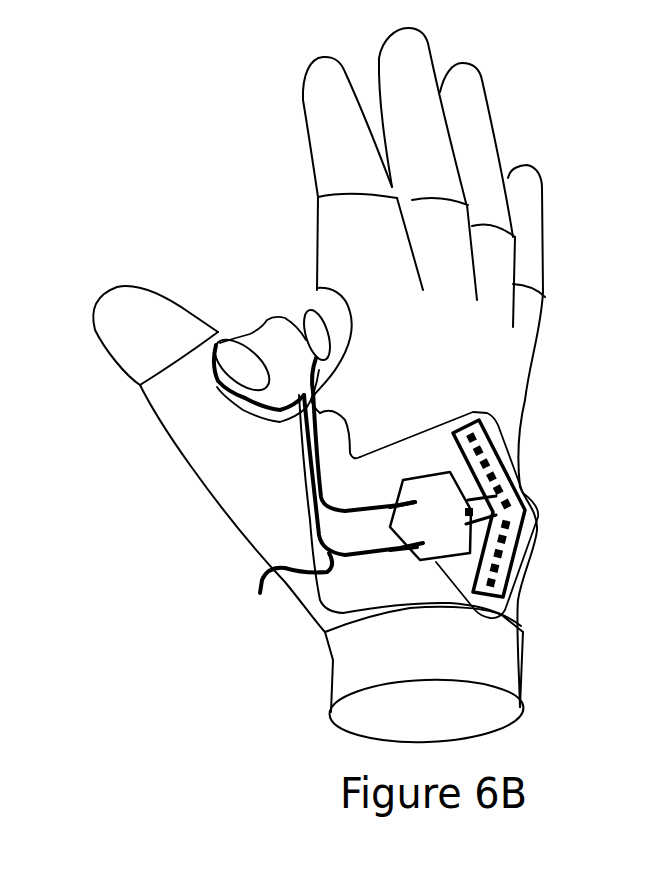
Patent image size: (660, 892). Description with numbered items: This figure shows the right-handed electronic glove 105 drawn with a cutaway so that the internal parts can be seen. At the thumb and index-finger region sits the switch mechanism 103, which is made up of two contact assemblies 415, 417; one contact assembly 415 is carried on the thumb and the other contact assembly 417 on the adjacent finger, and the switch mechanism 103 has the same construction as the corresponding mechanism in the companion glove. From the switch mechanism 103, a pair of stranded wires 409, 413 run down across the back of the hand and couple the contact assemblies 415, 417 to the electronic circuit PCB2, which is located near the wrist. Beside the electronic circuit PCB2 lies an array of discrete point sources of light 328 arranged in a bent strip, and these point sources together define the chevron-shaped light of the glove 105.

The switch mechanism 103 is at (268, 328).
The right-handed electronic glove 105 is at (521, 400).
The array of discrete point sources of light 328 is at (532, 543).
The stranded wire 409 is at (329, 511).
The stranded wire 413 is at (352, 435).
The contact assembly 415 is at (243, 388).
The contact assembly 417 is at (388, 312).
The electronic circuit PCB2 is at (452, 588).